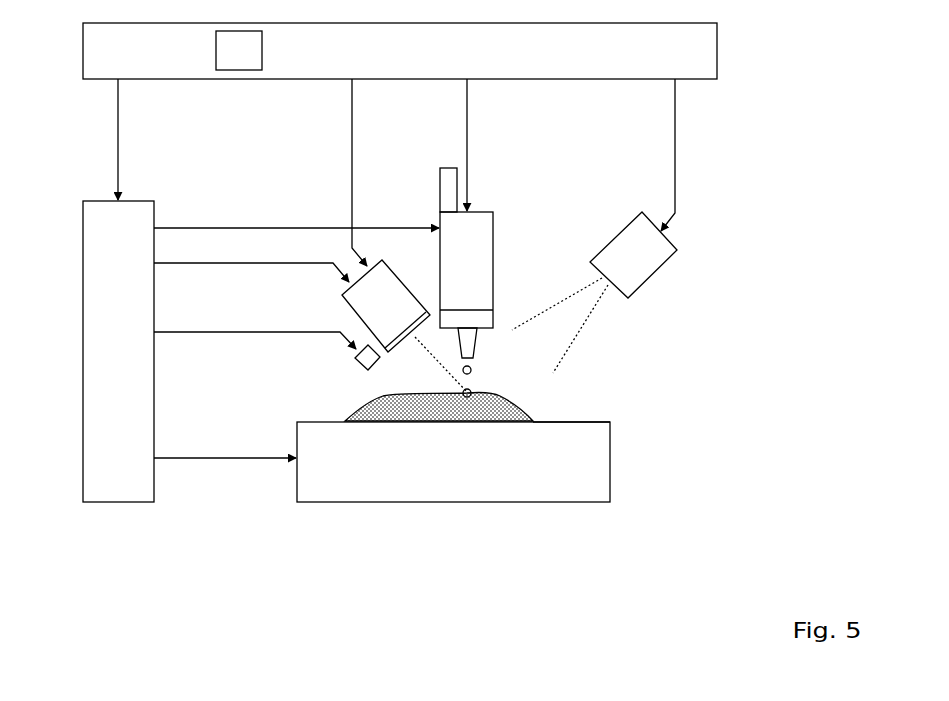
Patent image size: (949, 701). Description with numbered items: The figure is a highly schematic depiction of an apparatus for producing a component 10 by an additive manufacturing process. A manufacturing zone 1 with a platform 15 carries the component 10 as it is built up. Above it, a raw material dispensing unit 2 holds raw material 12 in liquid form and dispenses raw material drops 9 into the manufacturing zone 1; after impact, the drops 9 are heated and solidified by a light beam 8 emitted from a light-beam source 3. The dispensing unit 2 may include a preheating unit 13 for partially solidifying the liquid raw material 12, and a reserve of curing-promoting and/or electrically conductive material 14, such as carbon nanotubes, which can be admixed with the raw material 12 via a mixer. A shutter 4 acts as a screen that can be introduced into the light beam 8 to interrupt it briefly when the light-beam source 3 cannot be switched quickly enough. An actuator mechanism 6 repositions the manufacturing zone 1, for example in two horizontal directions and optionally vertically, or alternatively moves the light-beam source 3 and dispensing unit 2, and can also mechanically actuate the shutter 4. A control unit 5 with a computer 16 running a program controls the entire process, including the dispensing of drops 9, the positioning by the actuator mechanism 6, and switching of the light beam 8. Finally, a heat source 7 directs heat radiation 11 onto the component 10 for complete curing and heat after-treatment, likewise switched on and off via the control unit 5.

The manufacturing zone 1 is at (453, 462).
The raw material dispensing unit 2 is at (493, 217).
The light-beam source 3 is at (386, 306).
The shutter 4 is at (357, 362).
The control unit 5 is at (400, 51).
The actuator mechanism 6 is at (118, 351).
The heat source 7 is at (633, 255).
The light beam 8 is at (430, 354).
The raw material drops 9 is at (471, 370).
The component 10 is at (345, 414).
The heat radiation 11 is at (575, 331).
The raw material 12 is at (477, 268).
The preheating unit 13 is at (493, 322).
The curing-promoting and/or electrically conductive material 14 is at (440, 190).
The platform 15 is at (590, 420).
The computer 16 is at (239, 50).